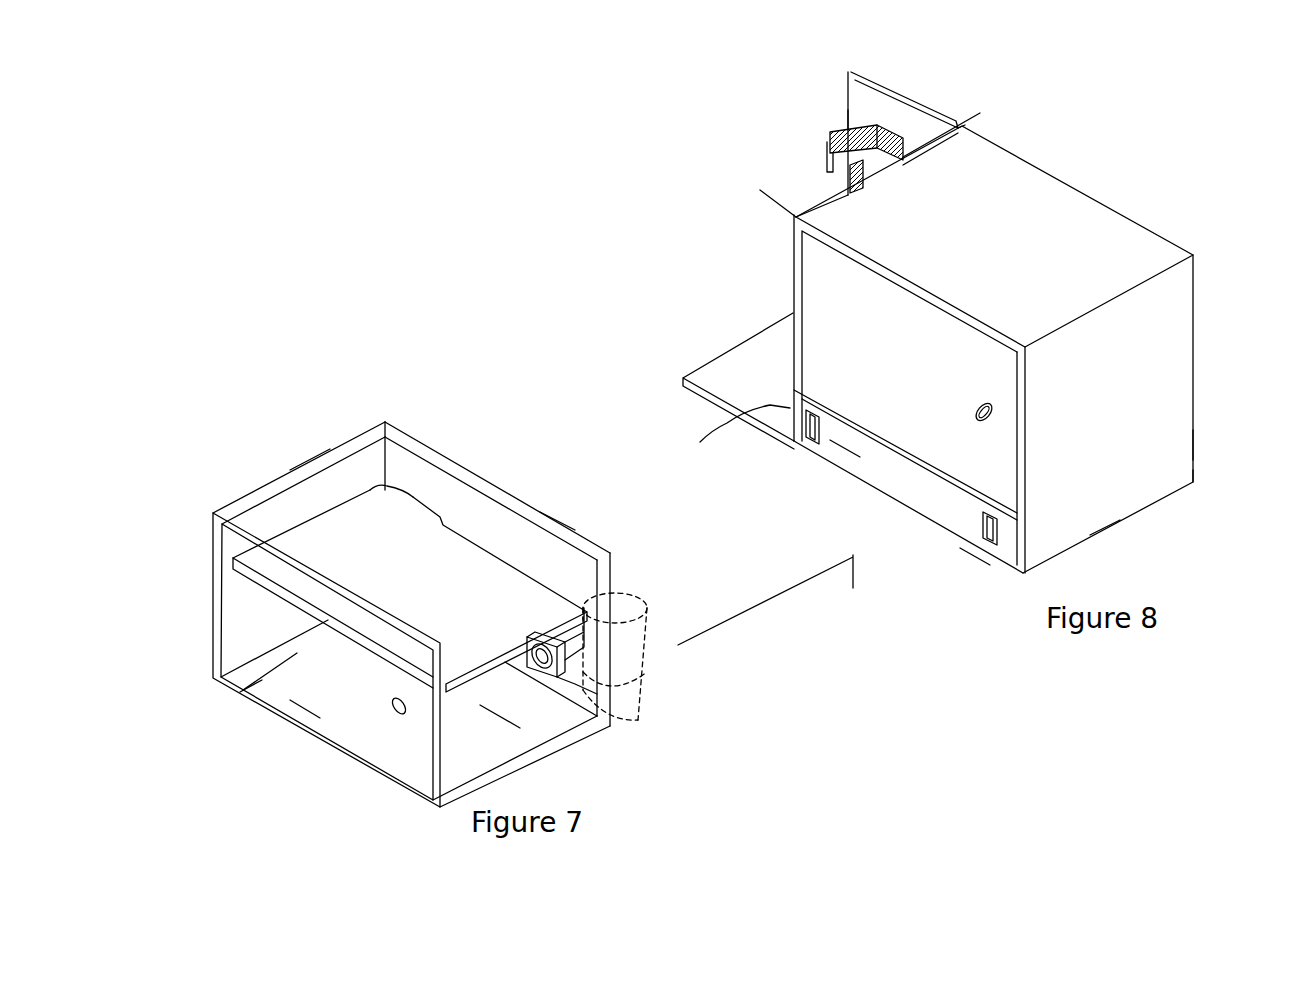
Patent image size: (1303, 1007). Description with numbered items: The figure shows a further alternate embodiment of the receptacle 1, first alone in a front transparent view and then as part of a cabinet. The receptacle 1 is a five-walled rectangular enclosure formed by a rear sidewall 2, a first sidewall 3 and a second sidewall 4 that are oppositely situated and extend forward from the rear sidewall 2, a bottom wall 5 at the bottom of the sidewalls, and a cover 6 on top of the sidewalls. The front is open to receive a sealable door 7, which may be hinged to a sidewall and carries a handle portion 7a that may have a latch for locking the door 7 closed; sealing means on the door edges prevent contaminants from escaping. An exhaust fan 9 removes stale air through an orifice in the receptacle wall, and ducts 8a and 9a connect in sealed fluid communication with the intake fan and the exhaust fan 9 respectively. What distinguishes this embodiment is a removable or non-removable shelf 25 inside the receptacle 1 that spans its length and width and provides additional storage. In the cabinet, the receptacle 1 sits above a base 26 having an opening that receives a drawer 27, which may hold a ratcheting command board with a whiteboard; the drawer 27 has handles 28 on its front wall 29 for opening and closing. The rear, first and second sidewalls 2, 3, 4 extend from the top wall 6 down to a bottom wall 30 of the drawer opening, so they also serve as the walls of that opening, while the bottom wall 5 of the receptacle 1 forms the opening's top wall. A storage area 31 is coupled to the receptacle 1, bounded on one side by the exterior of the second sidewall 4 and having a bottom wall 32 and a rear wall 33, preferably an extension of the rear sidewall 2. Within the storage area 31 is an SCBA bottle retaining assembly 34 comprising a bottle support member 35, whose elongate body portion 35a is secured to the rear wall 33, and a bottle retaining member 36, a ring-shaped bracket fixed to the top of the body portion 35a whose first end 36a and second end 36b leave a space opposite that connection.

In FIG. 7, the receptacle 1 is at (493, 462).
In FIG. 8, the receptacle 1 is at (1138, 223).
In FIG. 7, the rear sidewall 2 is at (560, 553).
In FIG. 8, the rear sidewall 2 is at (1195, 443).
In FIG. 7, the first sidewall 3 is at (500, 717).
In FIG. 8, the first sidewall 3 is at (1103, 512).
In FIG. 7, the second sidewall 4 is at (297, 490).
In FIG. 7, the bottom wall 5 is at (302, 705).
In FIG. 8, the bottom wall 5 is at (977, 492).
In FIG. 7, the cover 6 is at (435, 485).
In FIG. 7, the door 7 is at (243, 687).
In FIG. 7, the handle portion 7a is at (387, 713).
In FIG. 7, the duct 8a is at (408, 495).
In FIG. 7, the exhaust fan 9 is at (563, 633).
In FIG. 7, the duct 9a is at (640, 628).
In FIG. 7, the shelf 25 is at (608, 597).
In FIG. 8, the base 26 is at (975, 562).
In FIG. 8, the drawer 27 is at (952, 510).
In FIG. 8, the handles 28 is at (805, 437).
In FIG. 8, the front wall 29 is at (843, 448).
In FIG. 8, the bottom wall 30 is at (860, 480).
In FIG. 8, the storage area 31 is at (763, 190).
In FIG. 8, the bottom wall 32 is at (722, 368).
In FIG. 8, the rear wall 33 is at (877, 103).
In FIG. 8, the SCBA bottle retaining assembly 34 is at (867, 123).
In FIG. 8, the bottle support member 35 is at (907, 143).
In FIG. 8, the elongate body portion 35a is at (957, 123).
In FIG. 8, the bottle retaining member 36 is at (830, 145).
In FIG. 8, the first end 36a is at (826, 173).
In FIG. 8, the second end 36b is at (798, 213).